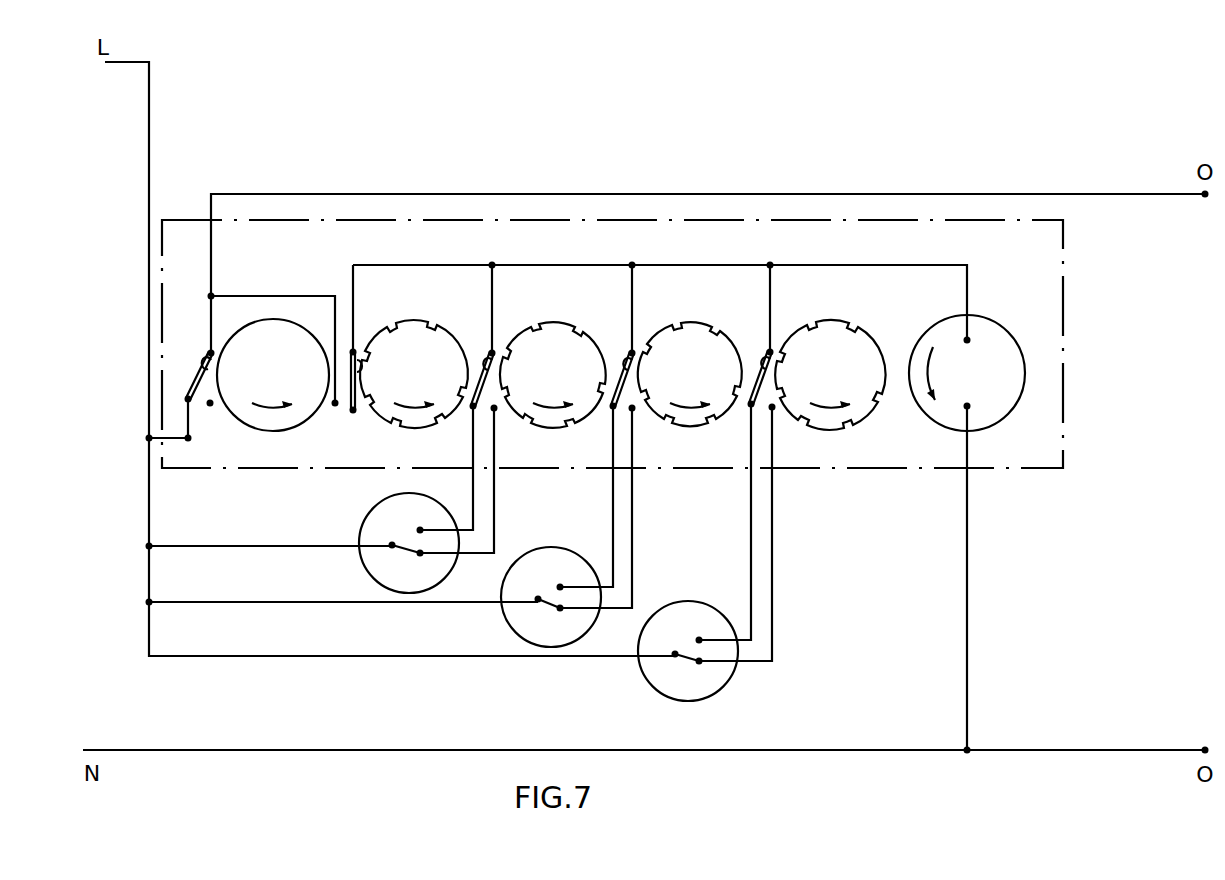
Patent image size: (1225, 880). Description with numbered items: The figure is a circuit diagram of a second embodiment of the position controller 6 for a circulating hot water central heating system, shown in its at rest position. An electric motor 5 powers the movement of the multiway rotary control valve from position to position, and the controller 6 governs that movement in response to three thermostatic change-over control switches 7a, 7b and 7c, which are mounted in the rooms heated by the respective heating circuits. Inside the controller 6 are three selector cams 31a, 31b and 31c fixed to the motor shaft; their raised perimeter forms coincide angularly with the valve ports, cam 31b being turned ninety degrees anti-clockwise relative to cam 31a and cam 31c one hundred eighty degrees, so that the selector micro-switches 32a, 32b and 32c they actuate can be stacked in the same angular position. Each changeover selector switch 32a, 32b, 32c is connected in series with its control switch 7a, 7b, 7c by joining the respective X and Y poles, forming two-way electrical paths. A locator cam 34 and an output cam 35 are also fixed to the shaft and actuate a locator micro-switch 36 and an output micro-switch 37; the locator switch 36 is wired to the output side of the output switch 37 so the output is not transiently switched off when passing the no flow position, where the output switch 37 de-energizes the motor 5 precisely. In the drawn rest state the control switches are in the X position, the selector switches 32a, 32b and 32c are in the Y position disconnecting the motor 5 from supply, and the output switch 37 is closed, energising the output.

The electric motor 5 is at (988, 333).
The position controller 6 is at (608, 219).
The control switch 7a is at (377, 525).
The control switch 7b is at (552, 562).
The control switch 7c is at (695, 618).
The selector cam 31a is at (550, 340).
The selector cam 31b is at (693, 338).
The selector cam 31c is at (833, 340).
The selector micro-switch 32a is at (483, 363).
The selector micro-switch 32b is at (622, 363).
The selector micro-switch 32c is at (760, 363).
The locator cam 34 is at (397, 343).
The output cam 35 is at (283, 337).
The locator micro-switch 36 is at (355, 393).
The output micro-switch 37 is at (187, 379).